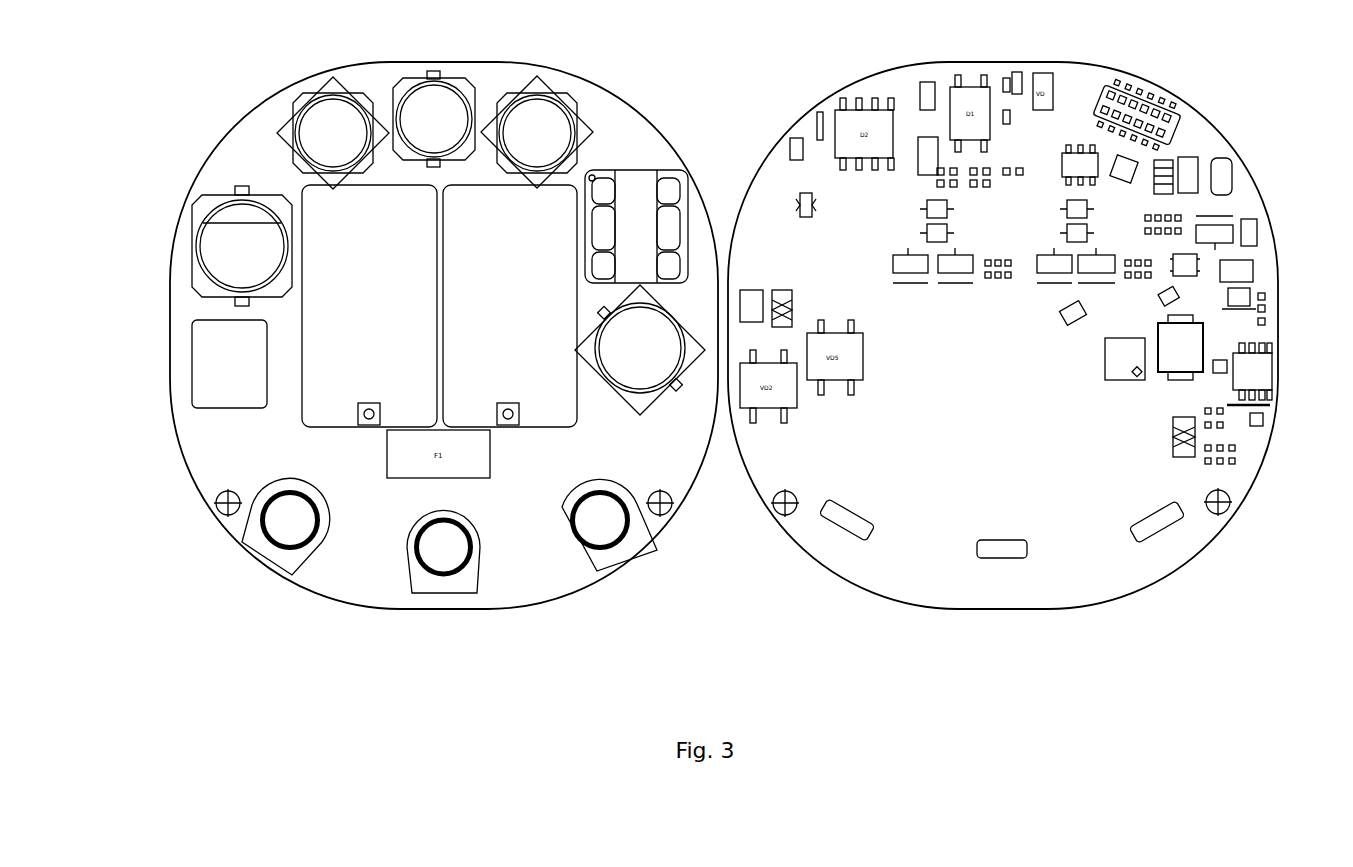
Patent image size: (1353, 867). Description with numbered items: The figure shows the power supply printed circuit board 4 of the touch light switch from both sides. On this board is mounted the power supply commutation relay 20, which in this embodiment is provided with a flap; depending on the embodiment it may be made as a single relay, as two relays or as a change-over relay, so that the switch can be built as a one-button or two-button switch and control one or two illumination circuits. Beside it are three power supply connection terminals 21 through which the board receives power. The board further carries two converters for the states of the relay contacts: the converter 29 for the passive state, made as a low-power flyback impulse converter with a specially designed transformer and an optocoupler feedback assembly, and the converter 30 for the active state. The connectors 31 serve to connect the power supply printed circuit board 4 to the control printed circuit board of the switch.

The power supply printed circuit board 4 is at (798, 535).
The power supply commutation relay 20 is at (417, 377).
The power supply connection terminals 21 is at (443, 567).
The converter for the passive state of the relay contacts 29 is at (670, 367).
The converter for the active state of the relay contacts 30 is at (205, 350).
The connectors for connecting the power supply printed circuit board to the control 31 is at (1157, 123).